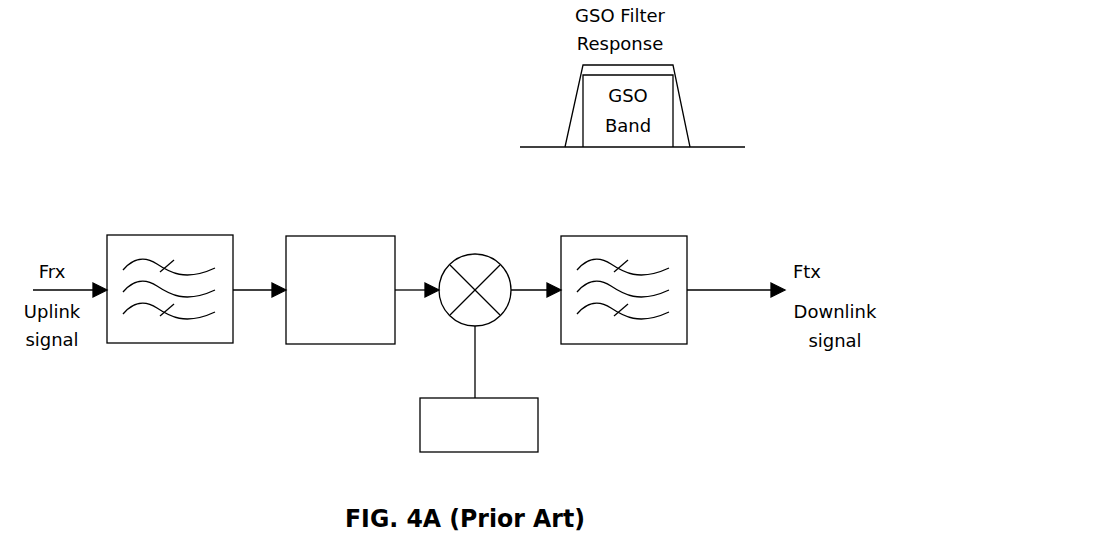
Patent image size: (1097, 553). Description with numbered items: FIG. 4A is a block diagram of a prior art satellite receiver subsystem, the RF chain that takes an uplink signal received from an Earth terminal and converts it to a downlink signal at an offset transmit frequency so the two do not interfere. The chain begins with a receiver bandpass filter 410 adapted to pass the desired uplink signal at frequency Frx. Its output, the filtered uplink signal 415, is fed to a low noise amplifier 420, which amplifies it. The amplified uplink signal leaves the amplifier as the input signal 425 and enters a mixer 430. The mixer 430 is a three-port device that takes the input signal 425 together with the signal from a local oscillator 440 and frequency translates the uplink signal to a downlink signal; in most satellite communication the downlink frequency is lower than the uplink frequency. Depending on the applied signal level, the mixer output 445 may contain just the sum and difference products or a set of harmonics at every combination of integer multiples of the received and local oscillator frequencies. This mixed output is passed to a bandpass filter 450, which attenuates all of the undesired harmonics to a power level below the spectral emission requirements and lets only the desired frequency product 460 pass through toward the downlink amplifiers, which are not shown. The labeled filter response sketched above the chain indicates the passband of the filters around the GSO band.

The receiver bandpass filter 410 is at (174, 330).
The filtered uplink signal 415 is at (249, 292).
The low noise amplifier 420 is at (343, 330).
The input signal 425 is at (413, 293).
The mixer 430 is at (482, 268).
The local oscillator 440 is at (518, 433).
The mixed signal 445 is at (528, 293).
The bandpass filter 450 is at (646, 255).
The desired frequency product 460 is at (718, 293).